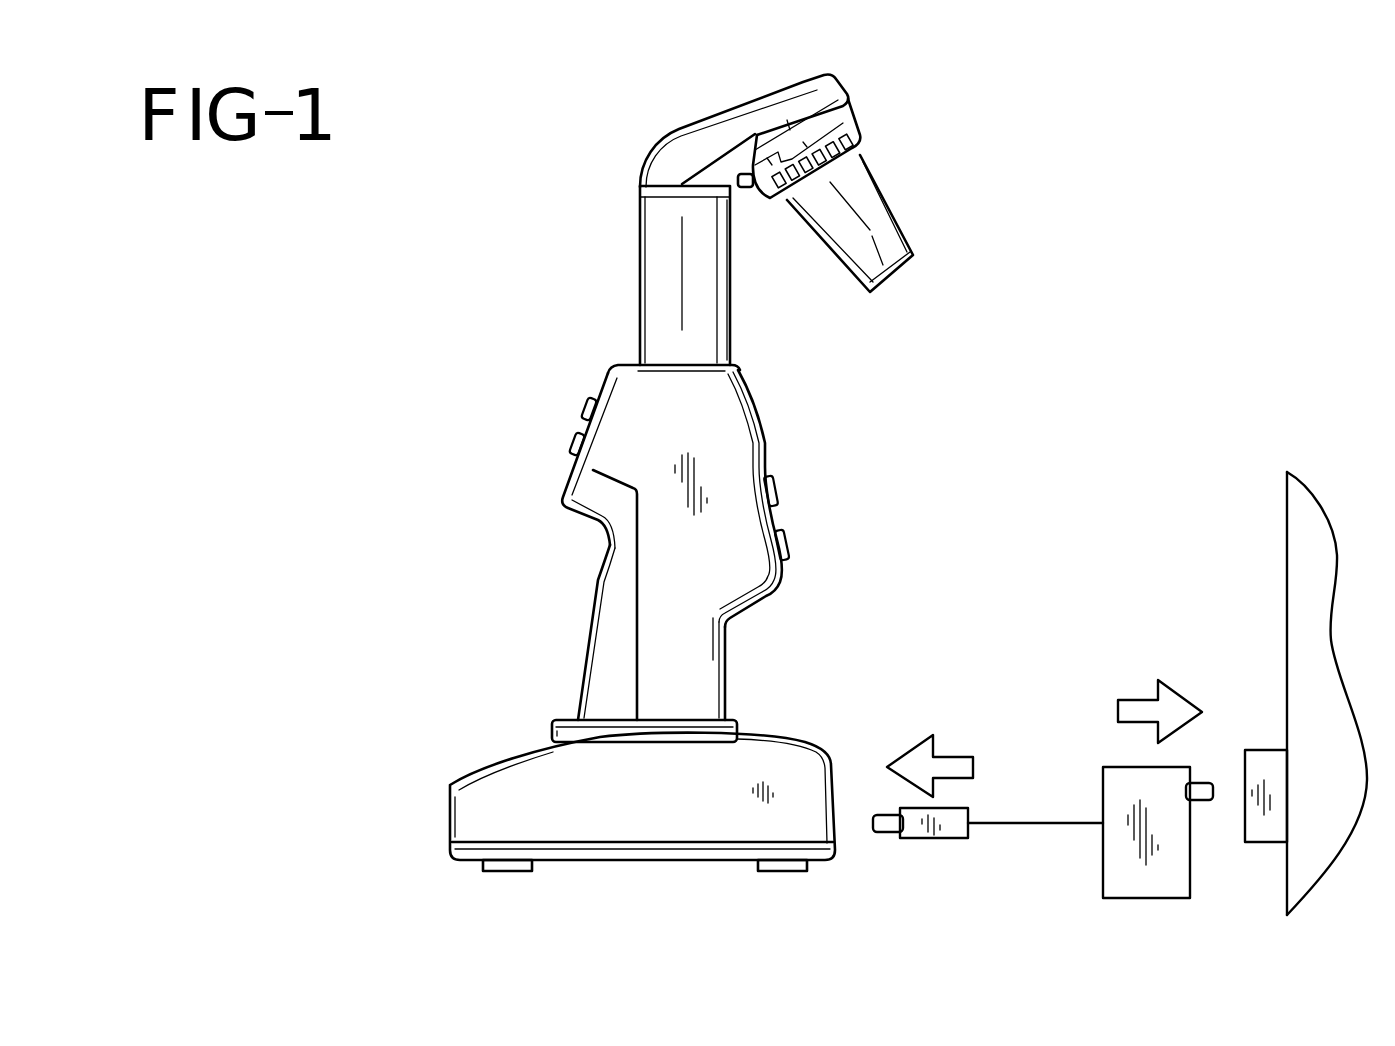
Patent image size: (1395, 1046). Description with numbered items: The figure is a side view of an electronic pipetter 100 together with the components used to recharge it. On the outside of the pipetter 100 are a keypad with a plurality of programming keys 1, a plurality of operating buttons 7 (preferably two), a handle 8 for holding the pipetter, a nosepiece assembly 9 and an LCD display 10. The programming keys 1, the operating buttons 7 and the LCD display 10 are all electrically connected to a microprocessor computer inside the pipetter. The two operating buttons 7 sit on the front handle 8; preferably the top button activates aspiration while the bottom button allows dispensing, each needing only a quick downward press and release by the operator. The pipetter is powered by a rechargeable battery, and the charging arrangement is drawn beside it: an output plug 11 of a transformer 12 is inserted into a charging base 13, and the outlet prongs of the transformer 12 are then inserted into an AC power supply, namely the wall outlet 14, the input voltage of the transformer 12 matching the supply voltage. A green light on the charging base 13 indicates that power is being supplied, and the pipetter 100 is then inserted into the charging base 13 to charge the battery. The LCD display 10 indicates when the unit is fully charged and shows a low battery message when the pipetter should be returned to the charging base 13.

The programming keys 1 is at (586, 405).
The operating buttons 7 is at (776, 490).
The handle 8 is at (732, 683).
The nosepiece assembly 9 is at (863, 164).
The LCD display 10 is at (609, 370).
The output plug 11 is at (970, 812).
The transformer 12 is at (1113, 766).
The charging base 13 is at (826, 750).
The wall outlet 14 is at (1261, 750).
The pipetter 100 is at (765, 423).